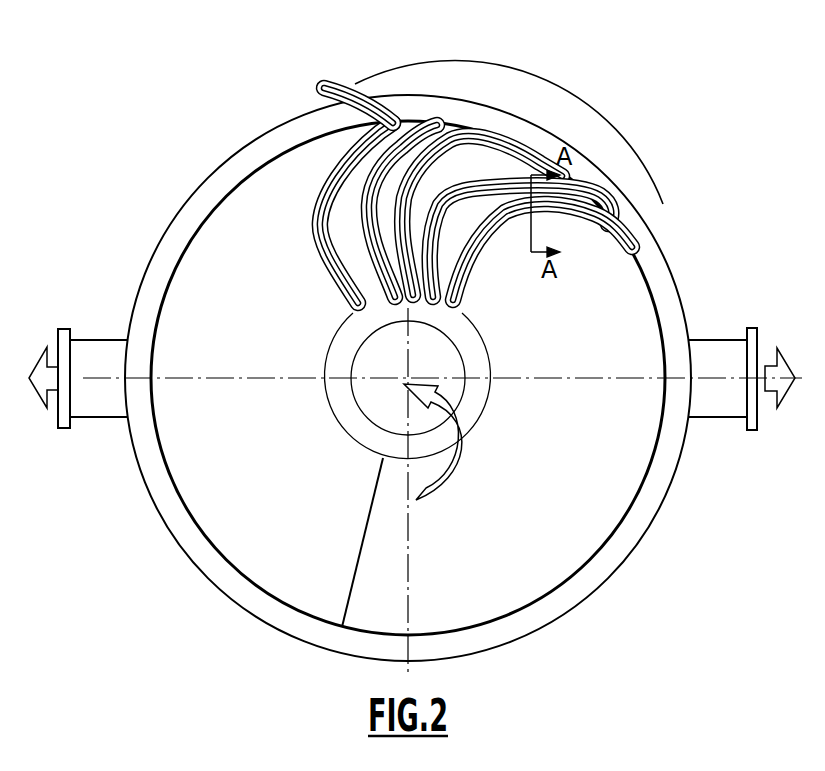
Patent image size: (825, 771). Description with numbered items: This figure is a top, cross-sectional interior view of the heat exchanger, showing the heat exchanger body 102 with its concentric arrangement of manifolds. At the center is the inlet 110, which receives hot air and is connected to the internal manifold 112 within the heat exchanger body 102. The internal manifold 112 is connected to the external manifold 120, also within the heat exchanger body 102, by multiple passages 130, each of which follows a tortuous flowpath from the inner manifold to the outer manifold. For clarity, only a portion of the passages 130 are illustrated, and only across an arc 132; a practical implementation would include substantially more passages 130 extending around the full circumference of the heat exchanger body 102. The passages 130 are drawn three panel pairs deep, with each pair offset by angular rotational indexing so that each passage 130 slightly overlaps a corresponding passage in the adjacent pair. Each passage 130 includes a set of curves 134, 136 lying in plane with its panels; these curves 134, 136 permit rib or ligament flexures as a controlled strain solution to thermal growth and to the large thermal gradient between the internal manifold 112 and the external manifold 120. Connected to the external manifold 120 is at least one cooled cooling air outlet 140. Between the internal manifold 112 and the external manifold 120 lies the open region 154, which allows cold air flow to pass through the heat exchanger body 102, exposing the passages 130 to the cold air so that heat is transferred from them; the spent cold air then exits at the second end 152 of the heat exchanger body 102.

The heat exchanger body 102 is at (256, 626).
The inlet 110 is at (367, 370).
The internal manifold 112 is at (467, 410).
The external manifold 120 is at (192, 546).
The passages 130 is at (432, 181).
The arc 132 is at (533, 77).
The curve 134 is at (318, 224).
The curve 136 is at (417, 140).
The cooled cooling air outlet 140 is at (90, 407).
The second end 152 is at (176, 303).
The open region 154 is at (362, 554).